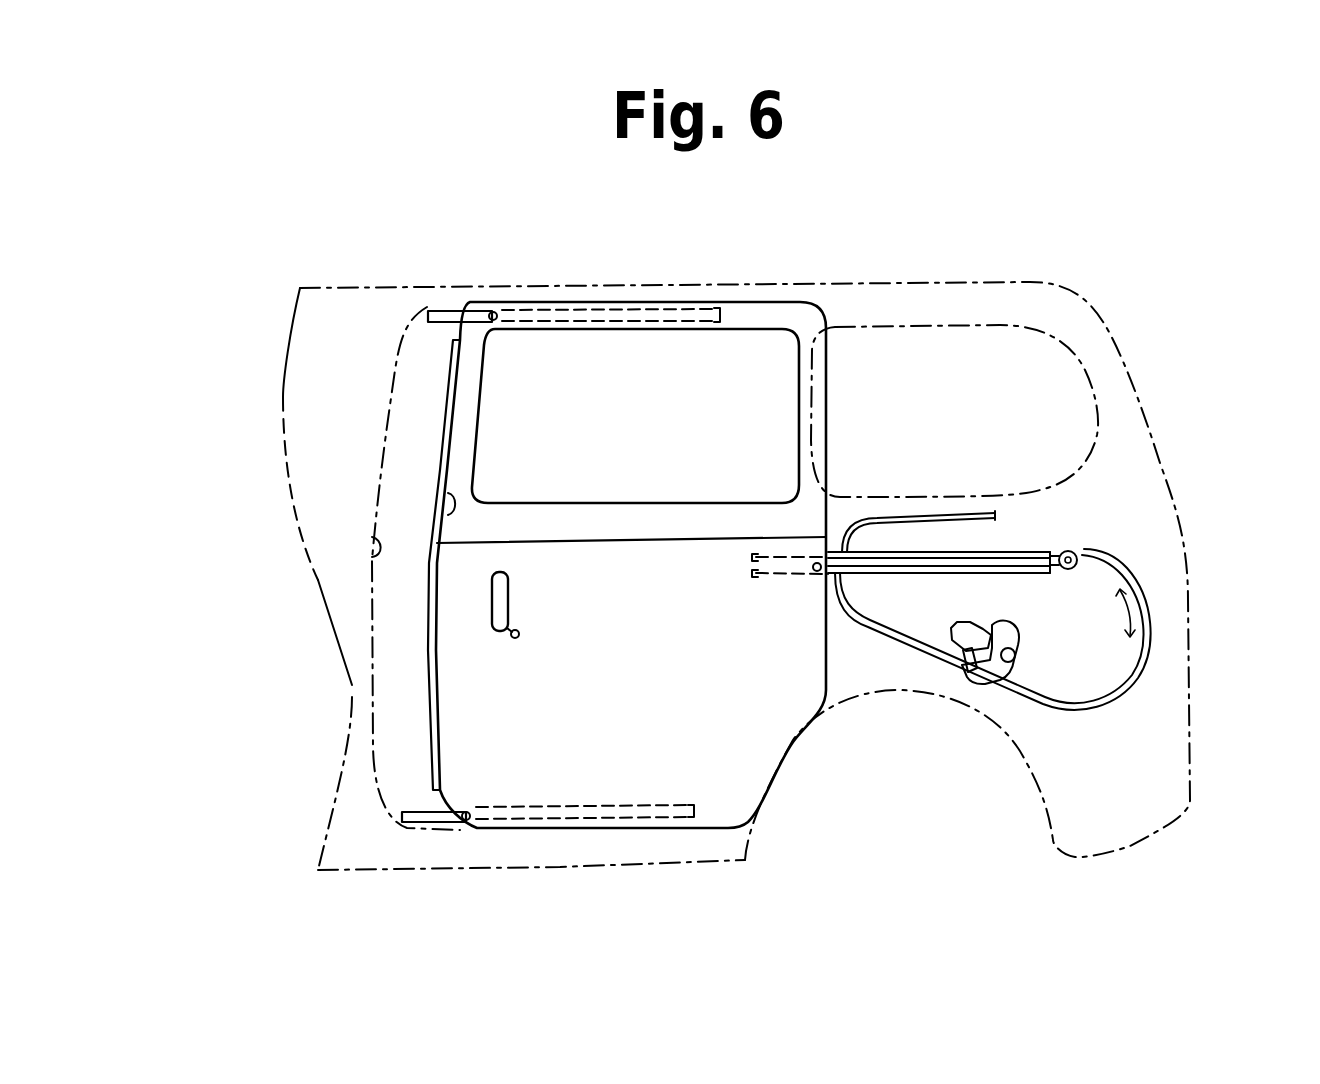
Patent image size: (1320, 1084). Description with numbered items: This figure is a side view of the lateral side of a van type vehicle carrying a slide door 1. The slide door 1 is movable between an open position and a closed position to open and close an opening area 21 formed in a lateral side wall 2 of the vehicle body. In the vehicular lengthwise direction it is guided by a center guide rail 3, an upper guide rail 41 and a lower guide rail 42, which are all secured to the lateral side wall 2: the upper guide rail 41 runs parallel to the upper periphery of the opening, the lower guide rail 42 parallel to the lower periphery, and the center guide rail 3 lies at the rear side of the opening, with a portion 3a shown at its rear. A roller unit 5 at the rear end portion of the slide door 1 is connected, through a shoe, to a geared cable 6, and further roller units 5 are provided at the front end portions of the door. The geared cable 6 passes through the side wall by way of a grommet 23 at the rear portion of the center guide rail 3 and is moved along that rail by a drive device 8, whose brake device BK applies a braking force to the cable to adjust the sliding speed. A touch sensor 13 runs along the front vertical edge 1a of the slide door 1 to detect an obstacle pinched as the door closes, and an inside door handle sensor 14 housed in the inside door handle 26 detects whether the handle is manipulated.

The slide door 1 is at (727, 800).
The front vertical edge of the slide door 1a is at (445, 493).
The lateral side wall 2 is at (1103, 375).
The center guide rail 3 is at (883, 577).
The upper guide portion of center rail 3a is at (1027, 548).
The roller unit 5 is at (492, 313).
The geared cable 6 is at (1105, 698).
The drive device 8 is at (967, 675).
The brake device BK is at (967, 673).
The touch sensor 13 is at (445, 430).
The inside door handle sensor 14 is at (514, 633).
The opening area 21 is at (378, 542).
The grommet 23 is at (1072, 553).
The inside door handle 26 is at (492, 577).
The upper guide rail 41 is at (447, 311).
The lower guide rail 42 is at (420, 822).